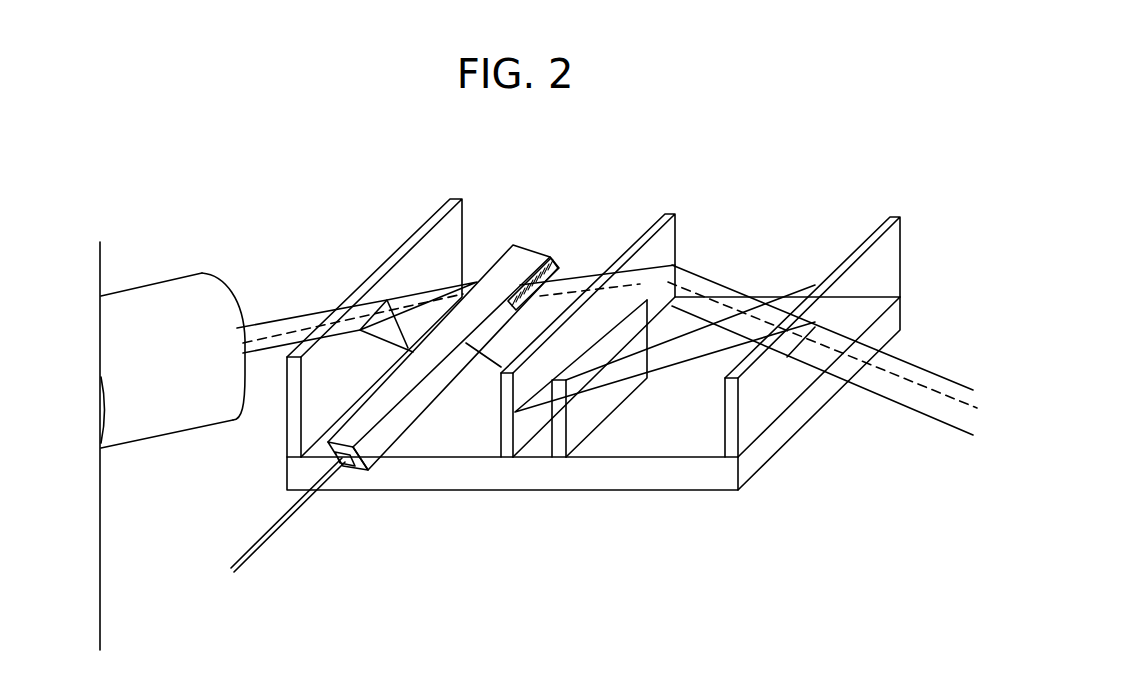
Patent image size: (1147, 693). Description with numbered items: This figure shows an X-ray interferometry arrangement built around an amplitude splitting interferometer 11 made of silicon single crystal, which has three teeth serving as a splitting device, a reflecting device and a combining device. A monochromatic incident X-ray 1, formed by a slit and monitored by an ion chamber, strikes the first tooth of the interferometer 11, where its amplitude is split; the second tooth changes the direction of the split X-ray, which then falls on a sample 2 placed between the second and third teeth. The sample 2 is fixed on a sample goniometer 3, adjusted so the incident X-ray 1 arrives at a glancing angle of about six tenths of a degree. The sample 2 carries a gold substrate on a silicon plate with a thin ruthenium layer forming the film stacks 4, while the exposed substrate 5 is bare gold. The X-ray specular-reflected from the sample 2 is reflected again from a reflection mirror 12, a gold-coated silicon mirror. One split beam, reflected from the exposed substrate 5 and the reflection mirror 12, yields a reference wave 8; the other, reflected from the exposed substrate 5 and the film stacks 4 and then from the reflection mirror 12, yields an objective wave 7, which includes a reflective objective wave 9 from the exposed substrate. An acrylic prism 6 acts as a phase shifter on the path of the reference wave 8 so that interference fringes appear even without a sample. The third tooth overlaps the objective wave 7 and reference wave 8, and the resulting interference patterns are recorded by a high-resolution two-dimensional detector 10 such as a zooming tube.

The incident X-ray 1 is at (947, 410).
The sample 2 is at (397, 430).
The sample goniometer 3 is at (245, 554).
The film stacks 4 is at (556, 260).
The exposed substrate 5 is at (458, 365).
The acrylic prism 6 is at (577, 435).
The objective wave 7 is at (440, 295).
The reference wave 8 is at (362, 318).
The reflective objective wave 9 is at (463, 305).
The high-resolution two-dimensional detector 10 is at (207, 407).
The amplitude splitting interferometer 11 is at (703, 477).
The reflection mirror 12 is at (352, 438).